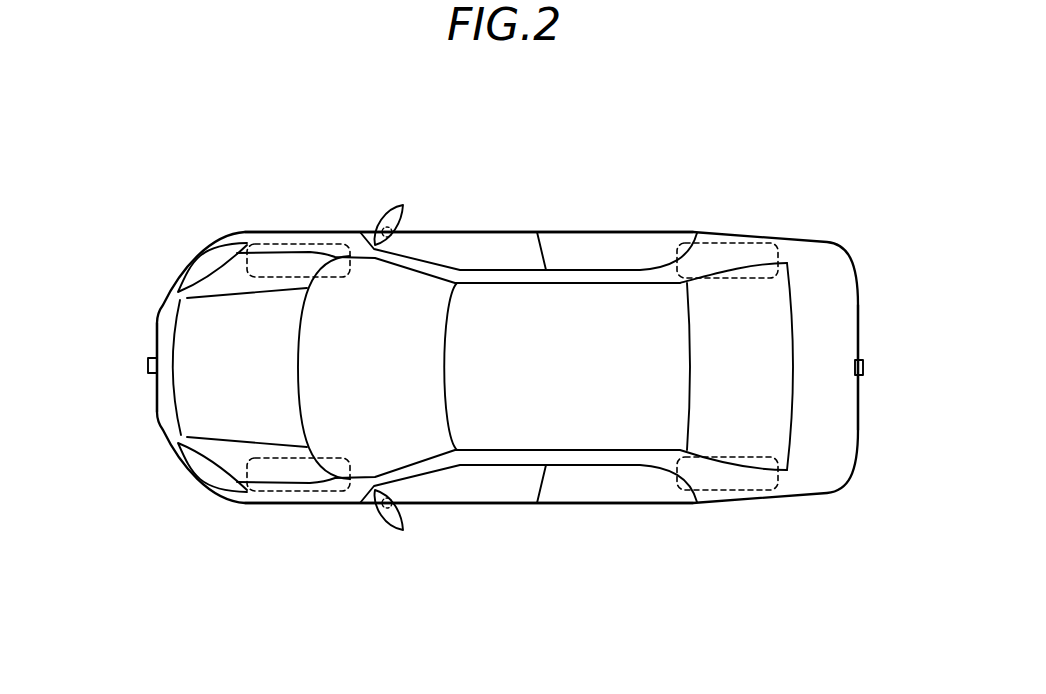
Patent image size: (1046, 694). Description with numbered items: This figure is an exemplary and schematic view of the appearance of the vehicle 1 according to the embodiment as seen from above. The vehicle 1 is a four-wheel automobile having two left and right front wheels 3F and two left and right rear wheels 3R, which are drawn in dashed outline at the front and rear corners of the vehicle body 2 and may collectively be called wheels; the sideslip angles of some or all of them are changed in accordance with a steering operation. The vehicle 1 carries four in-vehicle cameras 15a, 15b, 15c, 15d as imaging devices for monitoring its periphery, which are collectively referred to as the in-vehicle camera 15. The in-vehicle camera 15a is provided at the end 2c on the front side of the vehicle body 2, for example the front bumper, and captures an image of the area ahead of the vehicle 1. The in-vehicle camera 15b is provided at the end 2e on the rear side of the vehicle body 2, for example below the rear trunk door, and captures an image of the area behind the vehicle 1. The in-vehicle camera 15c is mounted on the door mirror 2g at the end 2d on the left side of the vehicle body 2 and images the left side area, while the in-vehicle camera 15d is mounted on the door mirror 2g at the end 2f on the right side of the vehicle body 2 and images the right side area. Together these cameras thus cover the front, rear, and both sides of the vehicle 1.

The vehicle 1 is at (597, 158).
The vehicle body 2 is at (803, 228).
The end on a front side of the vehicle body 2c is at (157, 410).
The end on a left side of the vehicle body 2d is at (617, 507).
The end on a rear side of the vehicle body 2e is at (858, 389).
The end on a right side of the vehicle body 2f is at (625, 232).
The door mirror 2g is at (404, 206).
The front wheels 3F is at (297, 243).
The rear wheels 3R is at (722, 243).
The in-vehicle camera 15 is at (501, 380).
The in-vehicle camera 15a is at (148, 365).
The in-vehicle camera 15b is at (863, 366).
The in-vehicle camera 15c is at (387, 510).
The in-vehicle camera 15d is at (386, 226).